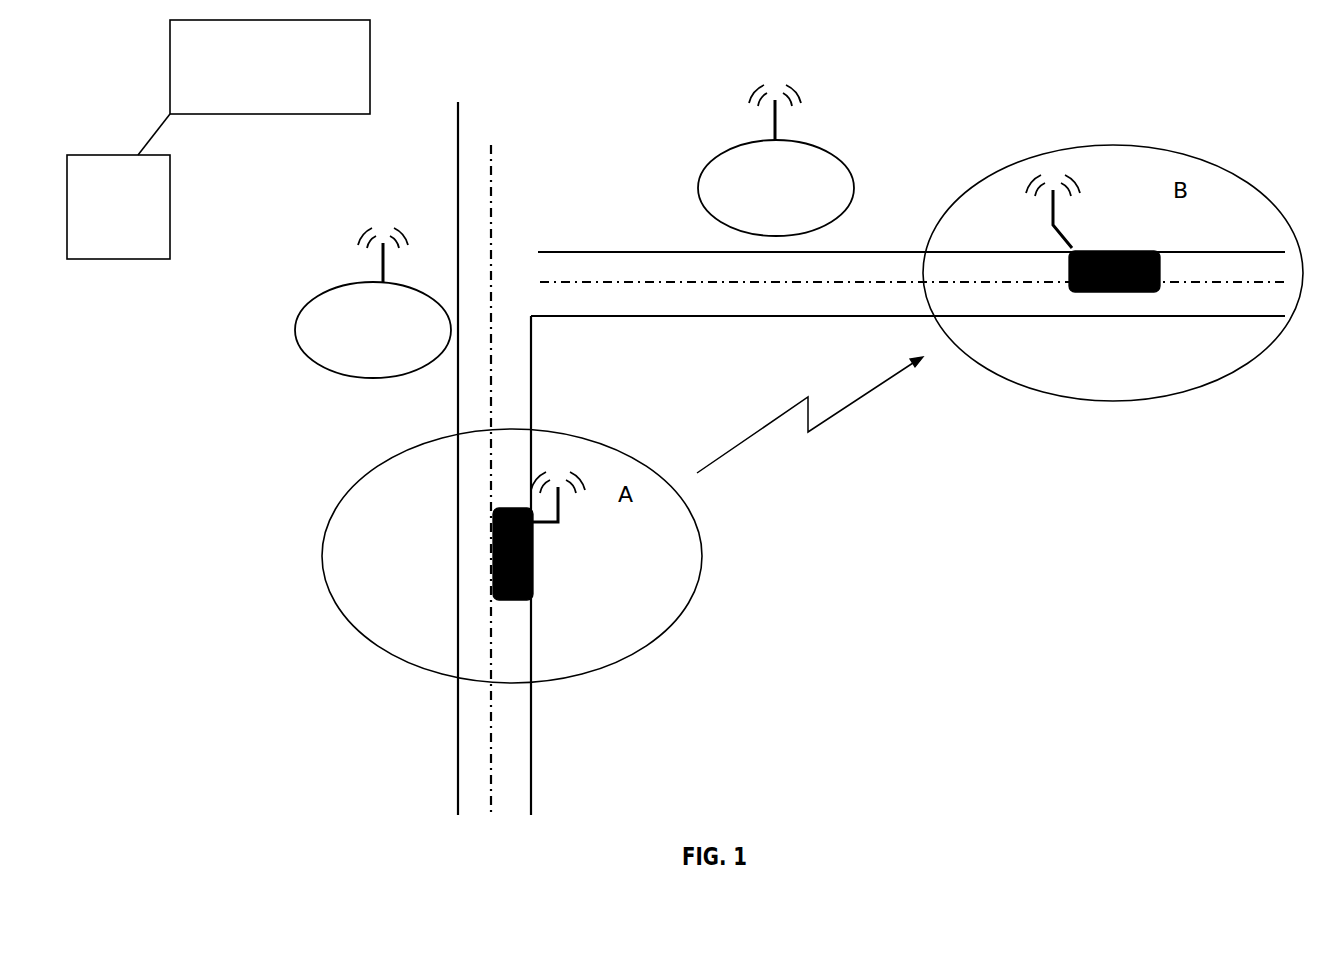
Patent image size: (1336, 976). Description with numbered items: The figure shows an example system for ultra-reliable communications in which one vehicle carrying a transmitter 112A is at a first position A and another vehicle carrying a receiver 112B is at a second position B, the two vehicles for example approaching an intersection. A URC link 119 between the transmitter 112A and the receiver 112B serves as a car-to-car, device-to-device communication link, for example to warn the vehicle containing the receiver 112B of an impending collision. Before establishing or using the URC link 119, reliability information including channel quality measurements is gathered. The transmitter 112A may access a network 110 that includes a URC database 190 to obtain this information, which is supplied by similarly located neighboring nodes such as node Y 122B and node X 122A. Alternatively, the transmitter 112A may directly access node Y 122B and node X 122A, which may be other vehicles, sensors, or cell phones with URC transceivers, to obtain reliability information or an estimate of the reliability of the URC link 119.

The network 110 is at (270, 67).
The URC database 190 is at (118, 207).
The node X 122A is at (776, 160).
The node Y 122B is at (373, 303).
The transmitter 112A is at (542, 562).
The receiver 112B is at (1118, 295).
The URC link 119 is at (878, 383).